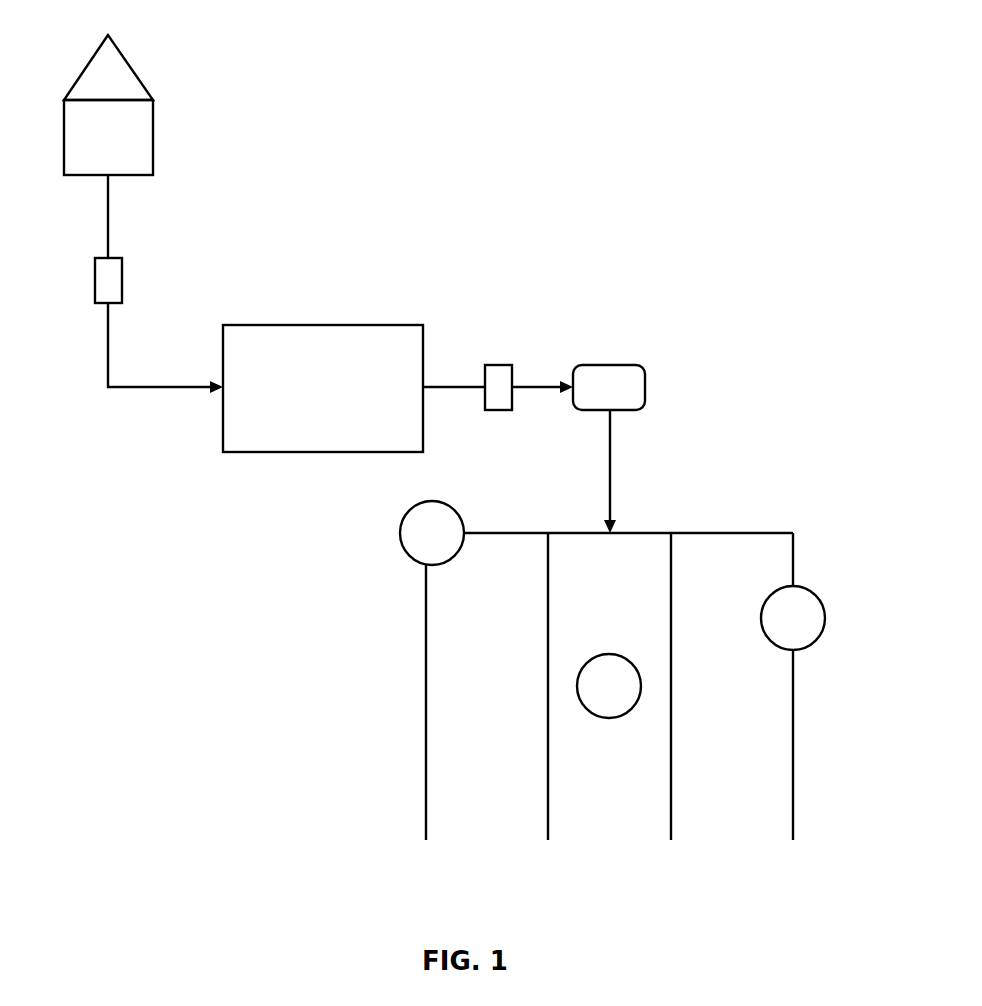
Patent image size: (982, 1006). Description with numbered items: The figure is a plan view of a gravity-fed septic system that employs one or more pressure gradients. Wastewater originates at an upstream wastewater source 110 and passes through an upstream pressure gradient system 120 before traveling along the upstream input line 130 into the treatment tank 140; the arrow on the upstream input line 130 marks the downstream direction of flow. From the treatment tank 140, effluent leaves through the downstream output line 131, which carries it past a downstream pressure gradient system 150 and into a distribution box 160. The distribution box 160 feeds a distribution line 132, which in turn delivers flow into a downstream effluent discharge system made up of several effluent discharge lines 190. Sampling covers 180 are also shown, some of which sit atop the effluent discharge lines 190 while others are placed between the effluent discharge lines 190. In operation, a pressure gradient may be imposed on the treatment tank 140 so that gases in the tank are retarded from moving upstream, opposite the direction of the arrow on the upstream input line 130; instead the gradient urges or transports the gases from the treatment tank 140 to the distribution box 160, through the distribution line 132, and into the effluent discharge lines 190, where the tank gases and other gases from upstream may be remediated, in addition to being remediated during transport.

The upstream wastewater source 110 is at (142, 142).
The upstream pressure gradient system 120 is at (112, 283).
The upstream input line 130 is at (158, 387).
The treatment tank 140 is at (346, 401).
The downstream pressure gradient system 150 is at (498, 370).
The downstream output line 131 is at (535, 390).
The distribution box 160 is at (632, 388).
The distribution line 132 is at (610, 468).
The sampling covers 180 is at (413, 544).
The effluent discharge lines 190 is at (793, 710).